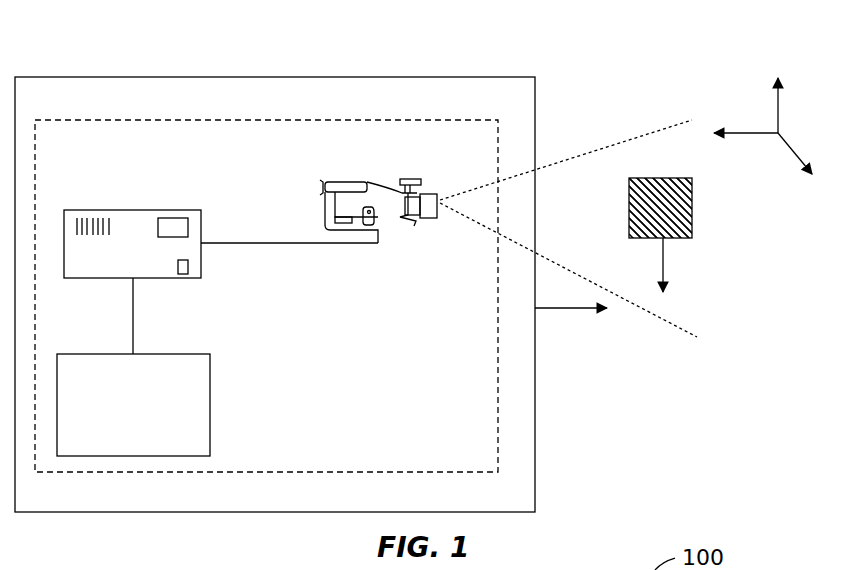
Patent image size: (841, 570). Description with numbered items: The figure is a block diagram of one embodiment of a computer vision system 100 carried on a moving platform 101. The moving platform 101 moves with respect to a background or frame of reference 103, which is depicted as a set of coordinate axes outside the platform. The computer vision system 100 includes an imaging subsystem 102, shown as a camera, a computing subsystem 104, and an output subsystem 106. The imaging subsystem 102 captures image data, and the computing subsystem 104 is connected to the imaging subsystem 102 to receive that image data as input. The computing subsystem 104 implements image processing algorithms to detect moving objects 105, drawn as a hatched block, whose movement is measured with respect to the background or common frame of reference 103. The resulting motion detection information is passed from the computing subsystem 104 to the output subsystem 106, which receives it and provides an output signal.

The computer vision system 100 is at (266, 296).
The moving platform 101 is at (278, 77).
The imaging subsystem 102 is at (408, 223).
The background or frame of reference 103 is at (736, 106).
The computing subsystem 104 is at (132, 210).
The moving objects 105 is at (692, 207).
The output subsystem 106 is at (210, 405).